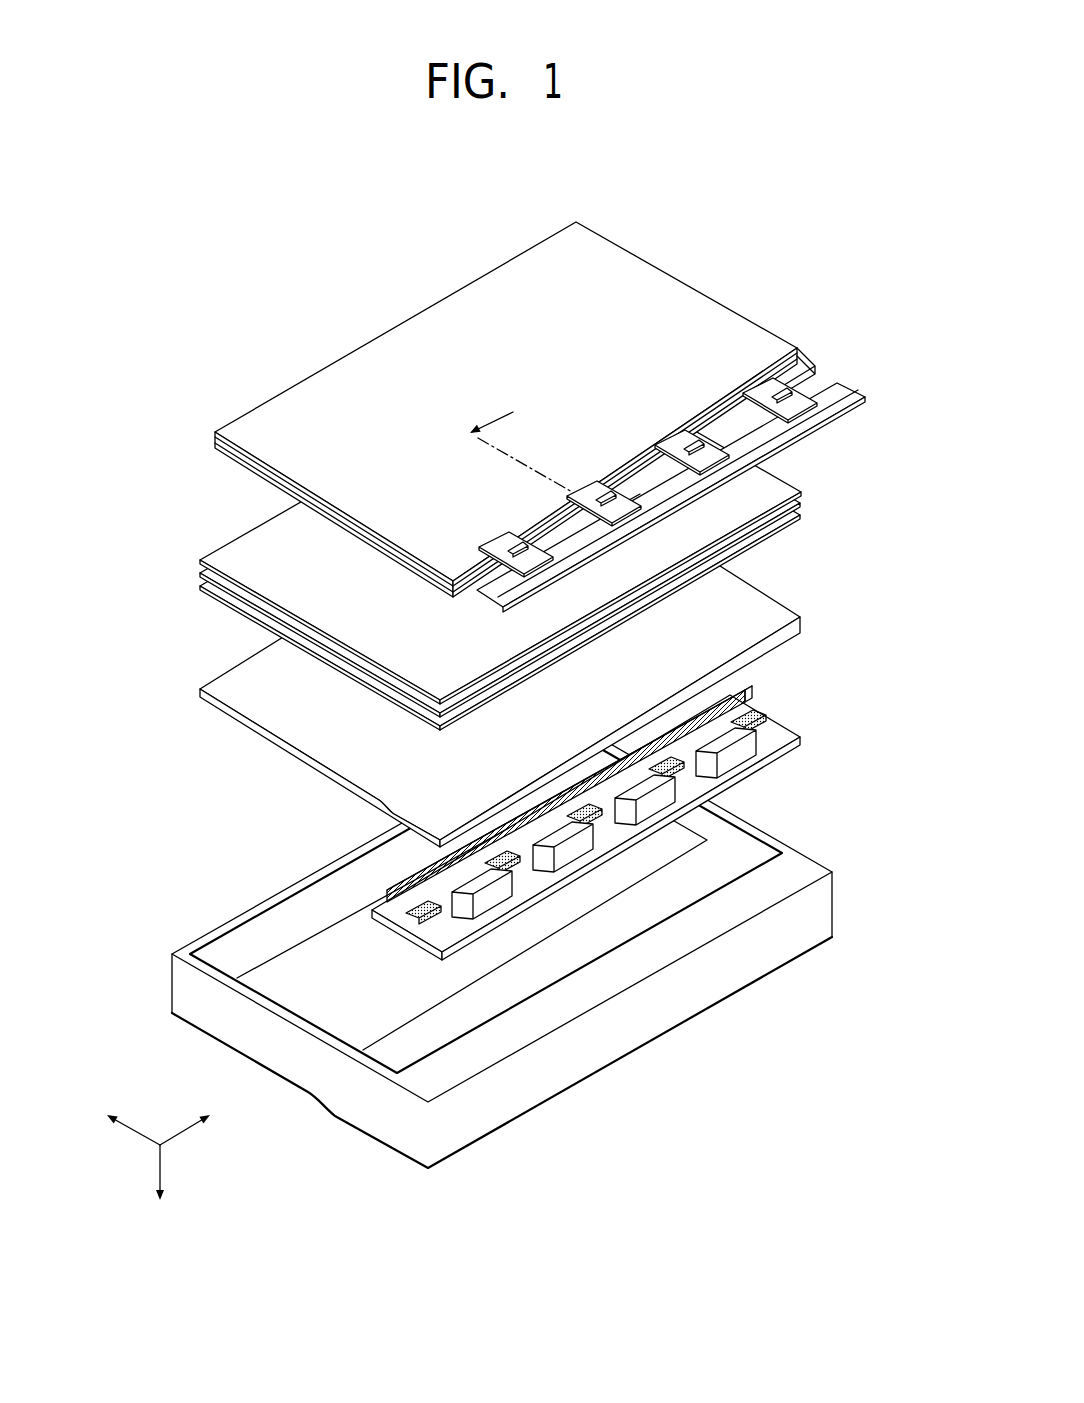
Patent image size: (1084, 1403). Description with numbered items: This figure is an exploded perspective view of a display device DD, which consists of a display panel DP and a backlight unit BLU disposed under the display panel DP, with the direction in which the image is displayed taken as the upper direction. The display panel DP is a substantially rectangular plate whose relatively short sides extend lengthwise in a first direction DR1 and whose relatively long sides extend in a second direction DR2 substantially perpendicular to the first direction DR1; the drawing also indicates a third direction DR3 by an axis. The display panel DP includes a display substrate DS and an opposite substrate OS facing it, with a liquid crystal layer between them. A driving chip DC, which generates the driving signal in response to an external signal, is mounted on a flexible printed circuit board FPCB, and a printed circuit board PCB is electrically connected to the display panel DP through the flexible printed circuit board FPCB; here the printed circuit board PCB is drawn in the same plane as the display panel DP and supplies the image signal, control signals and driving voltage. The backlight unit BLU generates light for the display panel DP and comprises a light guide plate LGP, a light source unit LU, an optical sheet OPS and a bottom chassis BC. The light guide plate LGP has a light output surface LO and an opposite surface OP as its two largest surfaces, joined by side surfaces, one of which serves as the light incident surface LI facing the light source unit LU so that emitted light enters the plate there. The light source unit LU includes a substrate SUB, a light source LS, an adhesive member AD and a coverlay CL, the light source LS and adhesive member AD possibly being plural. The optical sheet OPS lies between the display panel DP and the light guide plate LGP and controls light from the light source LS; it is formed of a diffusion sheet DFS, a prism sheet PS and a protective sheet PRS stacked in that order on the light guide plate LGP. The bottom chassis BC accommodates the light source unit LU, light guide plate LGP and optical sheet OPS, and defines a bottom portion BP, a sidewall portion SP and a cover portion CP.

The display device DD is at (677, 203).
The display panel DP is at (113, 423).
The opposite substrate OS is at (215, 433).
The display substrate DS is at (215, 444).
The flexible printed circuit board FPCB is at (773, 387).
The driving chip DC is at (783, 397).
The printed circuit board PCB is at (847, 393).
The backlight unit BLU is at (127, 540).
The optical sheet OPS is at (880, 463).
The protective sheet PRS is at (782, 490).
The prism sheet PS is at (802, 500).
The diffusion sheet DFS is at (800, 514).
The light guide plate LGP is at (873, 578).
The light output surface LO is at (762, 613).
The light incident surface LI is at (793, 630).
The opposite surface OP is at (790, 666).
The light source unit LU is at (825, 1021).
The substrate SUB is at (703, 800).
The light source LS is at (610, 833).
The adhesive member AD is at (572, 852).
The coverlay CL is at (462, 915).
The bottom chassis BC is at (785, 762).
The bottom portion BP is at (672, 855).
The sidewall portion SP is at (830, 920).
The cover portion CP is at (793, 872).
The first direction DR1 is at (116, 1116).
The second direction DR2 is at (214, 1121).
The third direction DR3 is at (167, 1186).